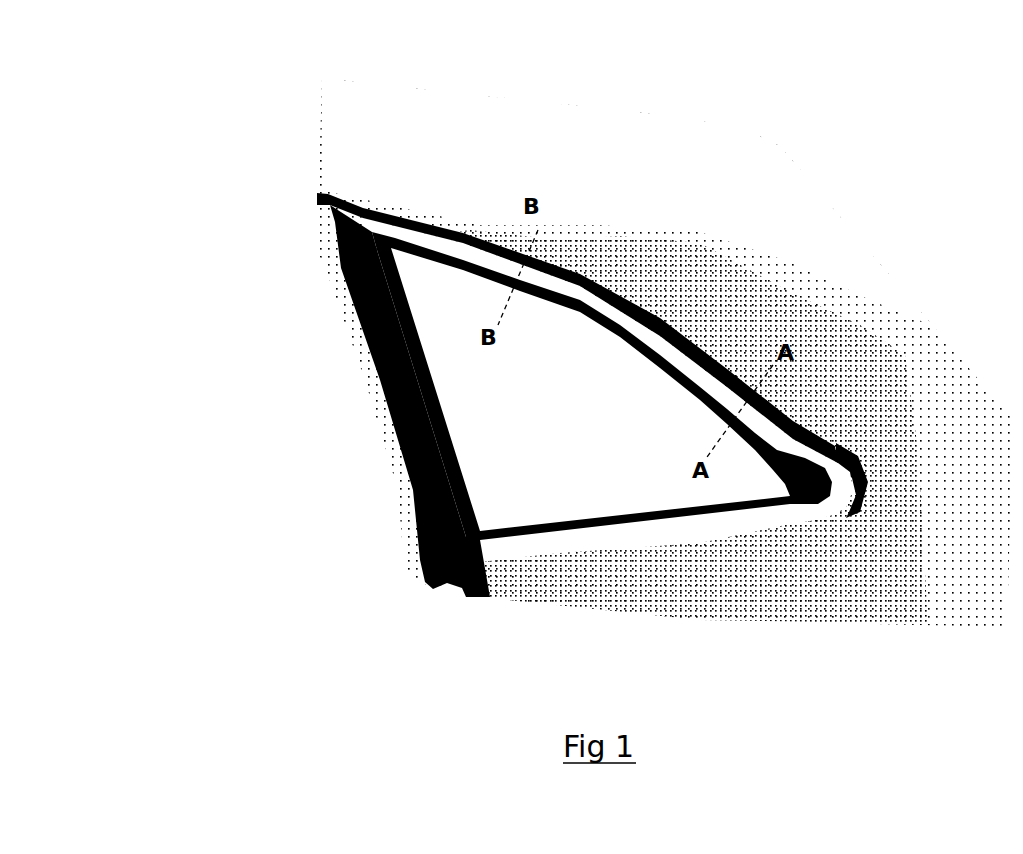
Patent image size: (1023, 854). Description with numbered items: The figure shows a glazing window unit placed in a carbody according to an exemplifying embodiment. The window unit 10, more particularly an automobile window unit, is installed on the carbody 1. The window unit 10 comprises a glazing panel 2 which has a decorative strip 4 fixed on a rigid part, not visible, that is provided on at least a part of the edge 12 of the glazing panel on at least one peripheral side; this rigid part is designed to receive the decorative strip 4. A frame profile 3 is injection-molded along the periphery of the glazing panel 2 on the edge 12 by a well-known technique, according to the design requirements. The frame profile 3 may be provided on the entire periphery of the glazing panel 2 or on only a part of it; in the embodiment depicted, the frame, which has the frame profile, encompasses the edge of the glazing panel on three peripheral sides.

The carbody 1 is at (760, 200).
The glazing panel 2 is at (540, 432).
The frame profile 3 is at (395, 302).
The decorative strip 4 is at (623, 318).
The window unit 10 is at (392, 373).
The edge of the glazing panel 12 is at (600, 293).